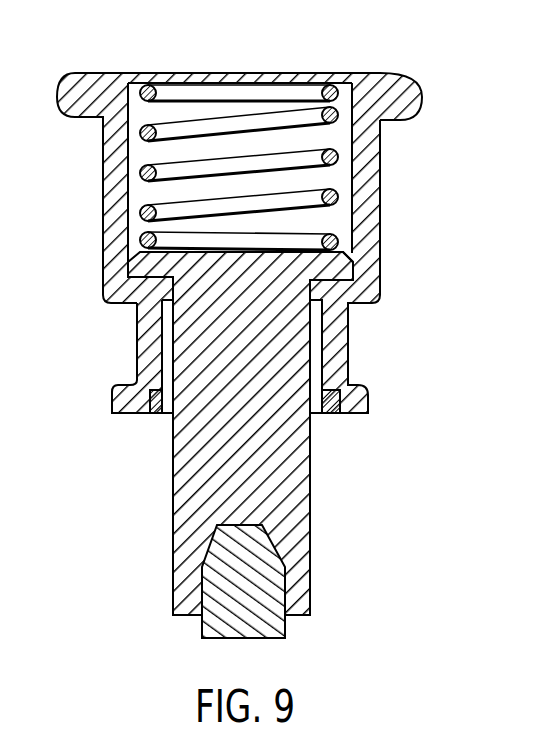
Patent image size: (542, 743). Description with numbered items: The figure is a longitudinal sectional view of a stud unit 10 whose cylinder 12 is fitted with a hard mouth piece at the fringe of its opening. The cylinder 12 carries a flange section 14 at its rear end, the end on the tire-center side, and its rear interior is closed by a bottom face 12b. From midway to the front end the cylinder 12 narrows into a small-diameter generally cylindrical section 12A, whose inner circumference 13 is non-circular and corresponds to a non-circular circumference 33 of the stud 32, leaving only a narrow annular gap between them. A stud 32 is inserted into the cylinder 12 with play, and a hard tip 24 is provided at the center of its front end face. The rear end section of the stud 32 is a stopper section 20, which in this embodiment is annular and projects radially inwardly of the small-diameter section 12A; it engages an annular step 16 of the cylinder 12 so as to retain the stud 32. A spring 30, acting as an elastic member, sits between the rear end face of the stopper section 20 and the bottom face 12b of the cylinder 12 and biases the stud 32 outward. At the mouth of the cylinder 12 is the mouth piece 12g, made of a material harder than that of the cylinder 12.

The stud unit 10 is at (422, 153).
The cylinder 12 is at (95, 205).
The small-diameter generally cylindrical section 12A is at (137, 347).
The bottom face of the cylinder 12b is at (190, 79).
The mouth piece 12g is at (336, 415).
The flange section 14 is at (417, 97).
The step 16 is at (358, 306).
The stopper section 20 is at (346, 268).
The inner circumference 13 is at (324, 362).
The spring 30 is at (258, 92).
The non-circular circumference of the stud 33 is at (312, 516).
The stud 32 is at (300, 569).
The hard tip 24 is at (287, 628).